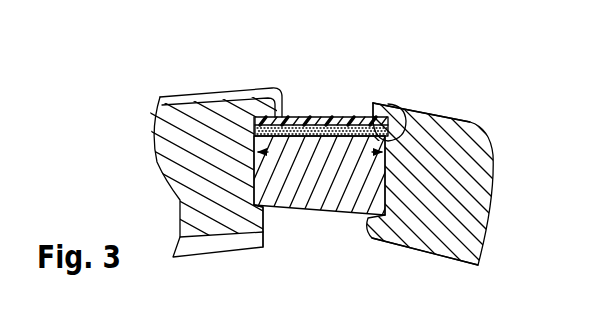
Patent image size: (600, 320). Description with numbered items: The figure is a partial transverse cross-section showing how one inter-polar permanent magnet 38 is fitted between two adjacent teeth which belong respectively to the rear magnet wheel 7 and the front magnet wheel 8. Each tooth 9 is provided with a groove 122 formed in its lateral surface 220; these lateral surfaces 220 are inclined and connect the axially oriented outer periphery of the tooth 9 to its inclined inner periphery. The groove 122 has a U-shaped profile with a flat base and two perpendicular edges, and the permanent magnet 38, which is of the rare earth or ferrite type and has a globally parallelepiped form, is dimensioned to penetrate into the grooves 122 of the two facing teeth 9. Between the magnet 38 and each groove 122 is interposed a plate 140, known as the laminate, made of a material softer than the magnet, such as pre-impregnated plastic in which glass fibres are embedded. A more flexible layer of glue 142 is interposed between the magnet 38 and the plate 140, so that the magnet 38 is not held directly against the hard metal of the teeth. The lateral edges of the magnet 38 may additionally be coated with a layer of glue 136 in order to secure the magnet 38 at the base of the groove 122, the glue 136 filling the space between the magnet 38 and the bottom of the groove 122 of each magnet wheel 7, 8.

The magnet wheel 7 is at (219, 80).
The second component 8 is at (485, 110).
The tooth 9 is at (190, 184).
The permanent magnet 38 is at (432, 142).
The groove 122 is at (290, 117).
The layer of glue 136 is at (255, 187).
The plate 140 is at (347, 120).
The layer of glue 142 is at (405, 103).
The lateral surface 220 is at (370, 108).